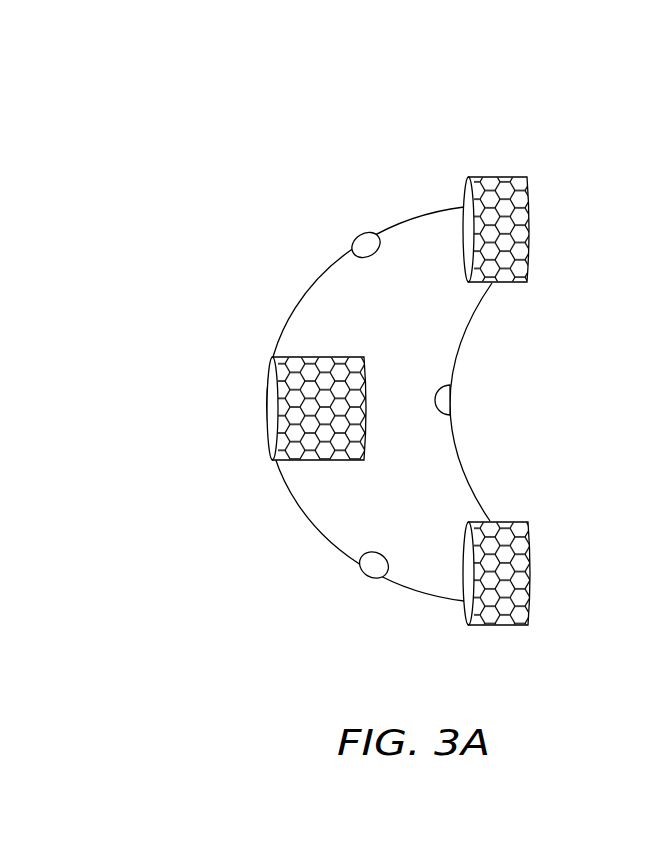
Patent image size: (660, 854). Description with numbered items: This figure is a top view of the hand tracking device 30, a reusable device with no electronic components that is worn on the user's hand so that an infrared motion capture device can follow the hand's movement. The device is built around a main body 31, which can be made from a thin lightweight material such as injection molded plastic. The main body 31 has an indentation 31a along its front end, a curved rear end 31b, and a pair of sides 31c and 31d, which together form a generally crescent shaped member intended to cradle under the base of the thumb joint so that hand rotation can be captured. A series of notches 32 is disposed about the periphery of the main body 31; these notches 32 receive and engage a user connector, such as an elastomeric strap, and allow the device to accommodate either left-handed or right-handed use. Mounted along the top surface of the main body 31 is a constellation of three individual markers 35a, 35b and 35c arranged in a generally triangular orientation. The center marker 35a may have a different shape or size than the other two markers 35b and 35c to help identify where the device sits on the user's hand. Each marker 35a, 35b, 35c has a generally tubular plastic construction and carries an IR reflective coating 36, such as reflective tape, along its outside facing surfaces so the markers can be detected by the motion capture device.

The hand tracking device 30 is at (276, 126).
The main body 31 is at (369, 424).
The indentation 31a is at (458, 352).
The curved rear end 31b is at (286, 328).
The side 31c is at (415, 590).
The side 31d is at (413, 221).
The notches 32 is at (356, 238).
The center marker 35a is at (258, 395).
The marker 35b is at (456, 192).
The marker 35c is at (455, 619).
The IR reflective coating 36 is at (527, 238).